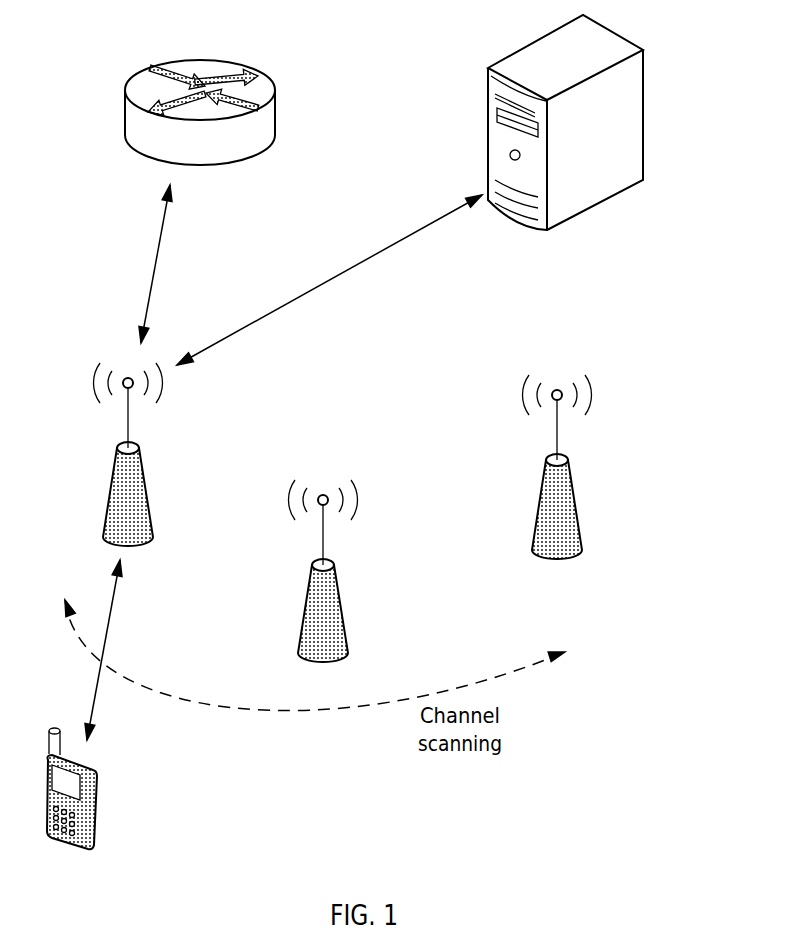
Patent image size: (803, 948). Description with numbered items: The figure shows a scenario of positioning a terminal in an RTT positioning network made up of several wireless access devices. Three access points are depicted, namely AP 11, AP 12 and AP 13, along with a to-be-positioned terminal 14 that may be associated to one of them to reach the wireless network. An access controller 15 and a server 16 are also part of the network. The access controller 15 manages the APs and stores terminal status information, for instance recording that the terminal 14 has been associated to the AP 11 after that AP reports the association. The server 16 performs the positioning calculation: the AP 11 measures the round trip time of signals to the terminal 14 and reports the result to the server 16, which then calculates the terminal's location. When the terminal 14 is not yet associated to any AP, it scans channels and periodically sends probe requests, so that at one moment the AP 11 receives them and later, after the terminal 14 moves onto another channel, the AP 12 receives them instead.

The AP 11 is at (150, 488).
The AP 12 is at (342, 590).
The AP 13 is at (578, 494).
The to-be-positioned terminal 14 is at (100, 795).
The access controller 15 is at (215, 60).
The server 16 is at (620, 32).